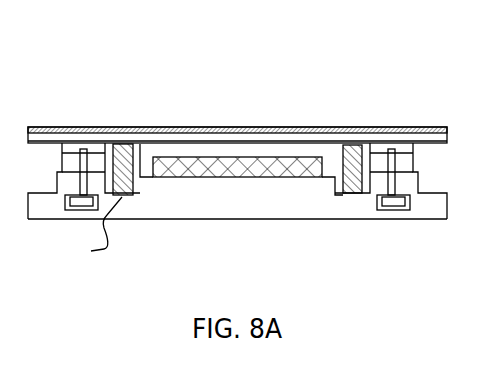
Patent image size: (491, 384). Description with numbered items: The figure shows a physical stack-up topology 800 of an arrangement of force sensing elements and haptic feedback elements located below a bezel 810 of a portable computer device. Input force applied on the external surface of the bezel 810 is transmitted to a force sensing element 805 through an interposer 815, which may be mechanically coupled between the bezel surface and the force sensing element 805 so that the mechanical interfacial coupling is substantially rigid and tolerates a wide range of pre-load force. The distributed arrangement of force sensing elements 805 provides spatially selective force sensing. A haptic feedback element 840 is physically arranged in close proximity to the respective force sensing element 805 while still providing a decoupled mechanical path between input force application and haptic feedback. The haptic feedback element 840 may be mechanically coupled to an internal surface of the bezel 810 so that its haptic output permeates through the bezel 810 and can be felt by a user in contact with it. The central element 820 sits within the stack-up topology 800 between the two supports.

The physical stack-up topology 800 is at (81, 51).
The force sensing element 805 is at (324, 150).
The bezel 810 is at (262, 127).
The interposer 815 is at (348, 194).
The sensor 820 is at (198, 155).
The haptic feedback element 840 is at (122, 197).